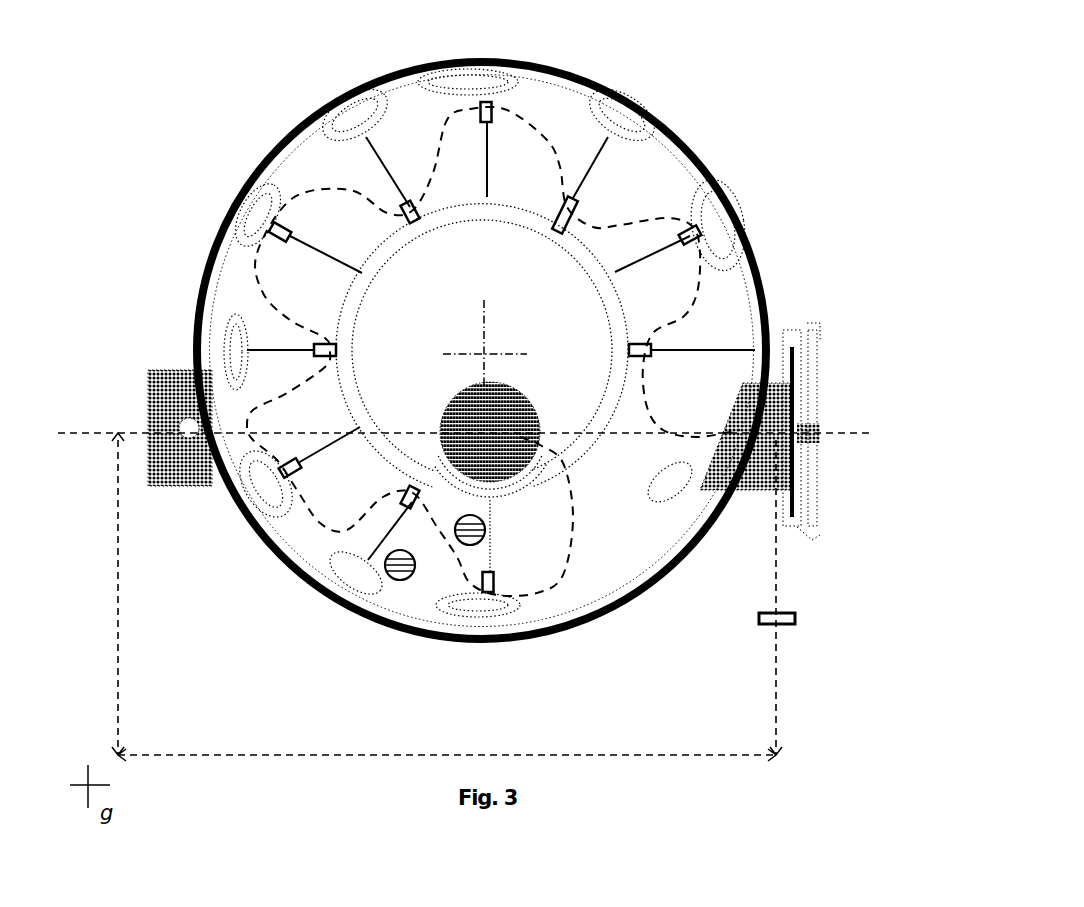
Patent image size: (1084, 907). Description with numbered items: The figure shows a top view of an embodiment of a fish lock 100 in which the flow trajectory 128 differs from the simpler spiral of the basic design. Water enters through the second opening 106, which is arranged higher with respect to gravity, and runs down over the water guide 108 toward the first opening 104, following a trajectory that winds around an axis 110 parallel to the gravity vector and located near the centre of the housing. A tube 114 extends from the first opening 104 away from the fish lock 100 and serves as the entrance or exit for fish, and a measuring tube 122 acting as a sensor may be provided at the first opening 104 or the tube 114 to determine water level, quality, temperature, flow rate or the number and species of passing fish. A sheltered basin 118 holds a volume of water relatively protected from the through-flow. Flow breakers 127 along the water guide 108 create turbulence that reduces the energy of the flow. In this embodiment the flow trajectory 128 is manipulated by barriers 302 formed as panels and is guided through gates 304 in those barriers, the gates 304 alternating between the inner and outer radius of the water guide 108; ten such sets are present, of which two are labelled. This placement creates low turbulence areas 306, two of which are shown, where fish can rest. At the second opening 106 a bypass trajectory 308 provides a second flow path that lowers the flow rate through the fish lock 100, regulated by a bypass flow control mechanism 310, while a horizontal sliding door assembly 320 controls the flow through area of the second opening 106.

The fish lock 100 is at (136, 84).
The first opening 104 is at (522, 473).
The second opening 106 is at (708, 473).
The water guide 108 is at (673, 260).
The axis 110 is at (512, 356).
The tube 114 is at (178, 457).
The basin 118 is at (507, 262).
The measuring tube 122 is at (187, 420).
The flow breakers 127 is at (377, 247).
The flow trajectory 128 is at (118, 433).
The barriers 302 is at (487, 165).
The gates 304 is at (492, 110).
The low turbulence areas 306 is at (397, 570).
The bypass trajectory 308 is at (776, 718).
The bypass flow control mechanism 310 is at (788, 613).
The horizontal sliding door assembly 320 is at (807, 515).